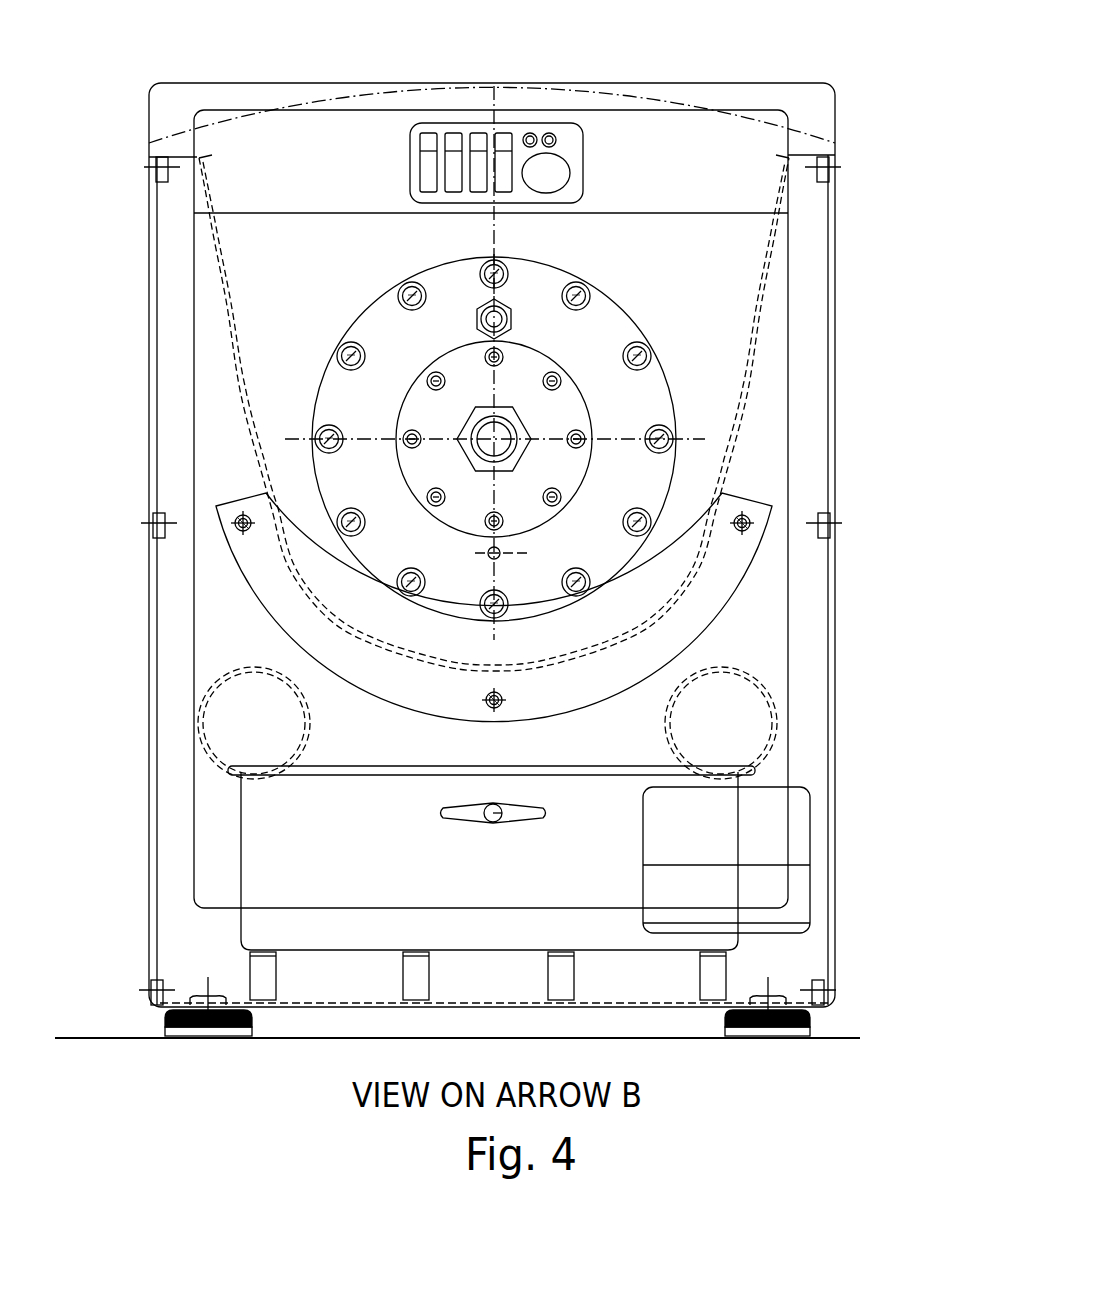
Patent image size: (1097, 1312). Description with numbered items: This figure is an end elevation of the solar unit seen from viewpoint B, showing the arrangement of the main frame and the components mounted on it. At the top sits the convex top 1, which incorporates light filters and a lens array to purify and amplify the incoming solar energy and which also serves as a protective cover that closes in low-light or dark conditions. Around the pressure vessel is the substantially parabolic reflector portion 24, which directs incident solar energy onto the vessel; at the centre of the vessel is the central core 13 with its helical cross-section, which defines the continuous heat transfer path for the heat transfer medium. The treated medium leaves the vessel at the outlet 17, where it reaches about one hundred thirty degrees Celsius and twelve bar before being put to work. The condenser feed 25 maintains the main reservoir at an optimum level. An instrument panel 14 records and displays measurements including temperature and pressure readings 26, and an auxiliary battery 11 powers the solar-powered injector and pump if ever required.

The convex top 1 is at (330, 97).
The auxiliary battery 11 is at (795, 920).
The central core 13 is at (470, 441).
The instrument panel 14 is at (511, 130).
The outlet 17 is at (512, 319).
The reflector portion 24 is at (237, 387).
The condenser feed 25 is at (490, 812).
The temperature and pressure readings 26 is at (548, 168).